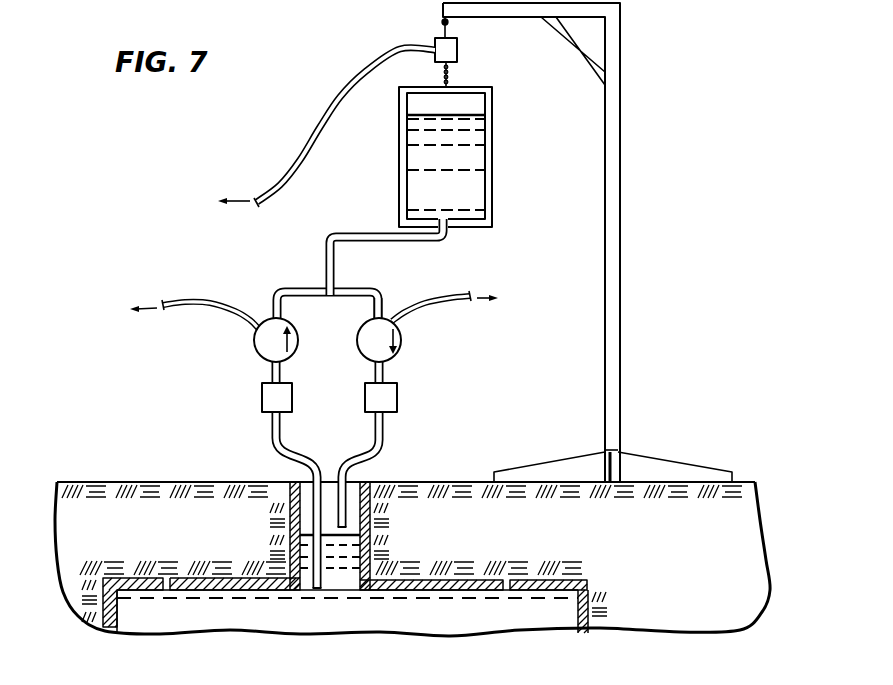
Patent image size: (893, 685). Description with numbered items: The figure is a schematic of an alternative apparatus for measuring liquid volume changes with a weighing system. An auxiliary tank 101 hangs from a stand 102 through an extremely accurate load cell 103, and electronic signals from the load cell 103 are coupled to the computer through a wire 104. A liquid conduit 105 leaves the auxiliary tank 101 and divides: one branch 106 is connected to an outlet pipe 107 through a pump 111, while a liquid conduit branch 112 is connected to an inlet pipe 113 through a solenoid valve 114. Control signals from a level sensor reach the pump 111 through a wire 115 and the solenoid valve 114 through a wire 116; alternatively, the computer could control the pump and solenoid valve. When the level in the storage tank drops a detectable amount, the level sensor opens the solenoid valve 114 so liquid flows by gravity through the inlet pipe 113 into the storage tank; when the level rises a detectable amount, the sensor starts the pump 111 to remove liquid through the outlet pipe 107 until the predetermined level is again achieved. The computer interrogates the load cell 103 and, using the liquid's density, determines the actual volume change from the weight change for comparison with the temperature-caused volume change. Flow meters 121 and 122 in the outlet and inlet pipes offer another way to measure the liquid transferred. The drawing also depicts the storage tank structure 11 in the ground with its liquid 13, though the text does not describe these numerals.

The concrete pit and drain conduit 11 is at (548, 580).
The liquid in pit 13 is at (375, 536).
The auxiliary tank 101 is at (493, 108).
The stand 102 is at (620, 118).
The load cell 103 is at (459, 52).
The wire 104 is at (309, 133).
The liquid conduit 105 is at (385, 232).
The branch 106 is at (290, 290).
The outlet pipe 107 is at (273, 436).
The pump 111 is at (255, 334).
The liquid conduit branch 112 is at (376, 290).
The inlet pipe 113 is at (385, 436).
The solenoid valve 114 is at (405, 324).
The wire 115 is at (197, 298).
The wire 116 is at (468, 296).
The flow meter 121 is at (262, 397).
The flow meter 122 is at (398, 396).